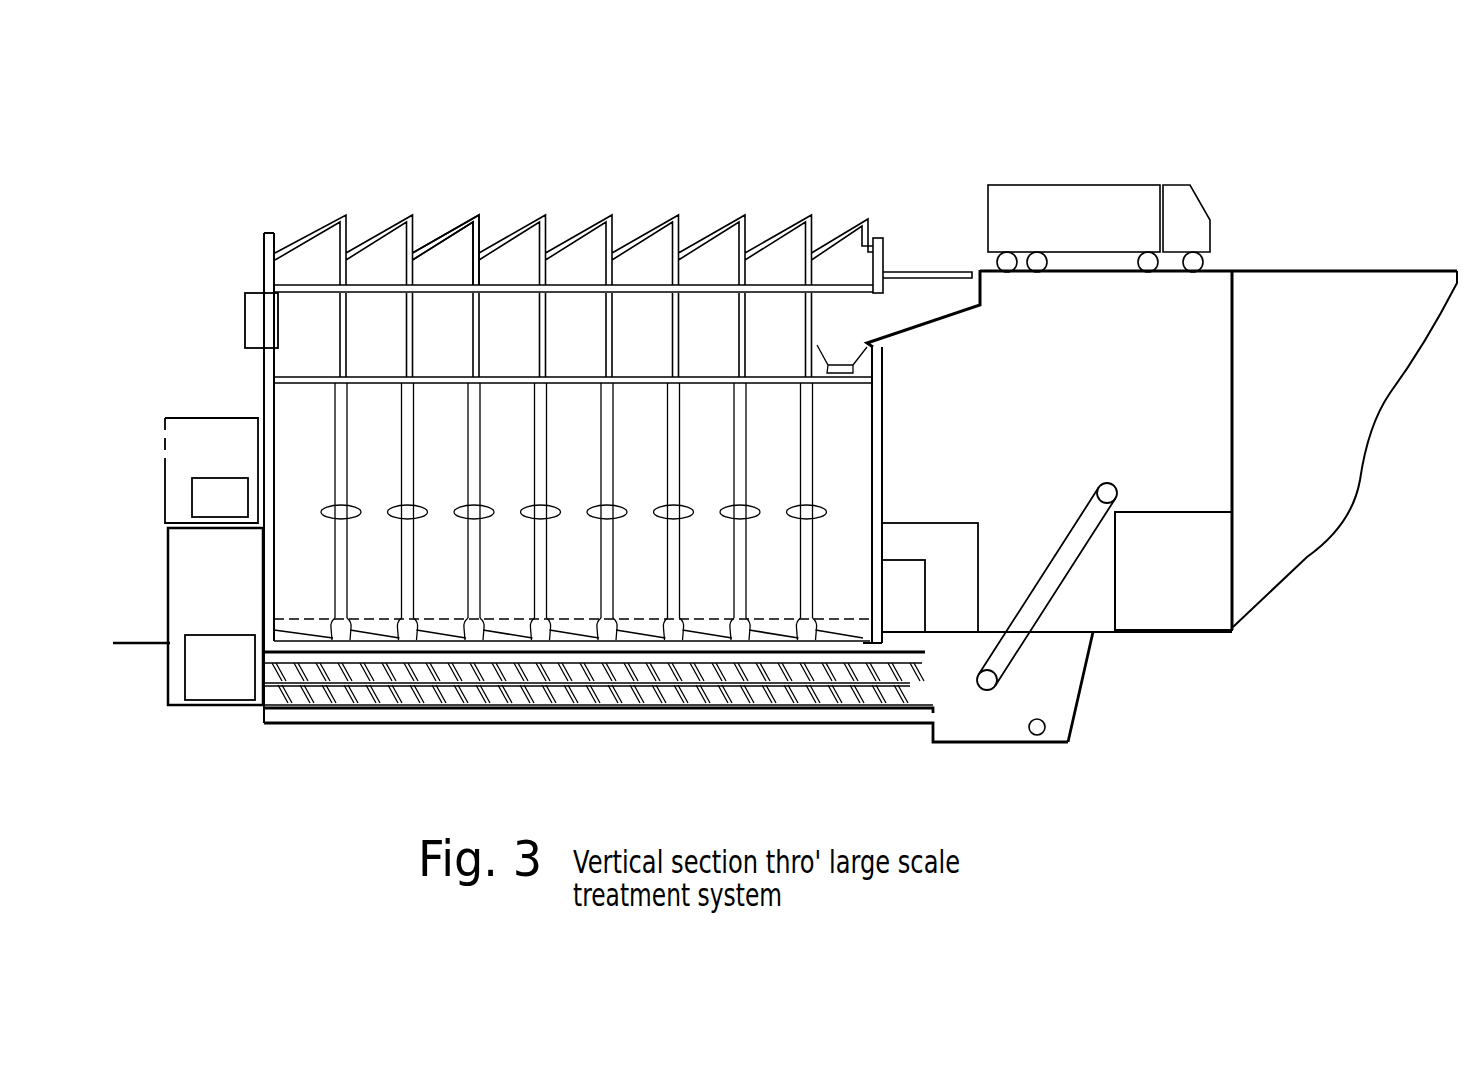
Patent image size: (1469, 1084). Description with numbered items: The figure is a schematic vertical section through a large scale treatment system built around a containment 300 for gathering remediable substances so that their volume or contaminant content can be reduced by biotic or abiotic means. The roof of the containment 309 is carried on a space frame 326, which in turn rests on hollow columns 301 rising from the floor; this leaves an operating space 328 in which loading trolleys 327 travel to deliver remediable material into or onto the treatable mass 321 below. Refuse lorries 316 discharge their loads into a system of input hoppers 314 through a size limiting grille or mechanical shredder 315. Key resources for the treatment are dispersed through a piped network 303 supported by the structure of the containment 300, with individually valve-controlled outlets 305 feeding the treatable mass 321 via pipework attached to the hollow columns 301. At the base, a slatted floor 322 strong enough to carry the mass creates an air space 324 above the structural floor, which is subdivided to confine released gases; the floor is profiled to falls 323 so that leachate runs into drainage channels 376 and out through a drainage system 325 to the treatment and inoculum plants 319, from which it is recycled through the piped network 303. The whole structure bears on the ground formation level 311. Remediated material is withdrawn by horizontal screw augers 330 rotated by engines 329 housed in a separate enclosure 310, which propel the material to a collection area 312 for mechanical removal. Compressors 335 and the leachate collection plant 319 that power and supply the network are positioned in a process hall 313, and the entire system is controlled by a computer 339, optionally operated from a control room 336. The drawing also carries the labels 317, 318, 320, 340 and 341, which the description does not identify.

The containment 300 is at (566, 478).
The hollow columns 301 is at (608, 490).
The piped network 303 is at (573, 365).
The outlets 305 is at (827, 516).
The roof of the containment 309 is at (579, 235).
The separate enclosure 310 is at (188, 616).
The ground formation levels 311 is at (666, 742).
The collection area 312 is at (1043, 697).
The process hall 313 is at (1047, 570).
The input hoppers 314 is at (923, 308).
The size limiting grille and/or mechanical shredder 315 is at (927, 258).
The refuse lorries 316 is at (1099, 228).
The loading platform 317 is at (1218, 450).
The wall mounted unit 318 is at (241, 320).
The treatment/innoculum plants 319 is at (912, 596).
The ground profile 320 is at (1345, 449).
The treatable mass 321 is at (551, 511).
The slatted floor 322 is at (337, 616).
The falls 323 is at (475, 618).
The air space 324 is at (707, 621).
The drainage system 325 is at (1040, 735).
The space frame 326 is at (446, 250).
The loading trolleys 327 is at (842, 342).
The operating space 328 is at (576, 335).
The engines 329 is at (220, 667).
The horizontal screw augers 330 is at (598, 682).
The compressors 335 is at (930, 577).
The control room 336 is at (211, 470).
The computer 339 is at (220, 497).
The collection chamber 340 is at (1173, 571).
The trench floor 341 is at (1078, 612).
The drainage channels 376 is at (655, 715).